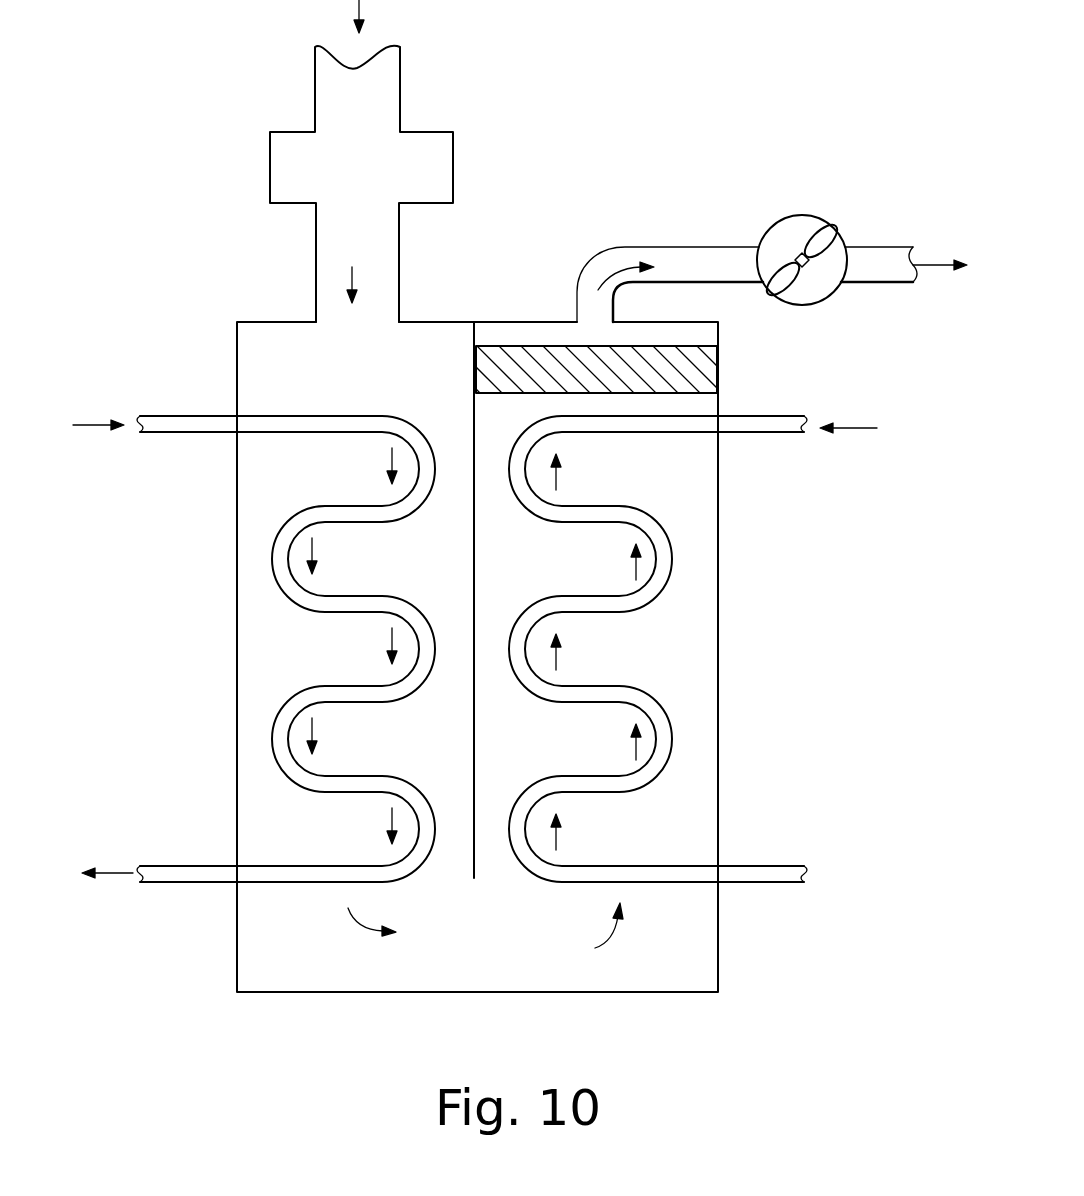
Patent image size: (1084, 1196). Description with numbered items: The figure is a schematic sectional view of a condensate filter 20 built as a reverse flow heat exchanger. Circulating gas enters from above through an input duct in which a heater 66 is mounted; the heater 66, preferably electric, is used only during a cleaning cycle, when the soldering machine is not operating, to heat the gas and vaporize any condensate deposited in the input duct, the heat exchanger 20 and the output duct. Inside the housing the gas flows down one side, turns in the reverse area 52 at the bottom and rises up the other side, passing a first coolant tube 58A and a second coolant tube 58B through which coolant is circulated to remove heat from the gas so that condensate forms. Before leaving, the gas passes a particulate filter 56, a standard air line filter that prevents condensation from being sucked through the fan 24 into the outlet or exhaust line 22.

The condensate filter 20 is at (575, 146).
The outlet or exhaust line 22 is at (863, 284).
The fan 24 is at (803, 216).
The reverse area 52 is at (258, 965).
The particulate filter 56 is at (712, 372).
The first coolant tube 58A is at (268, 563).
The second coolant tube 58B is at (673, 560).
The heater 66 is at (430, 131).